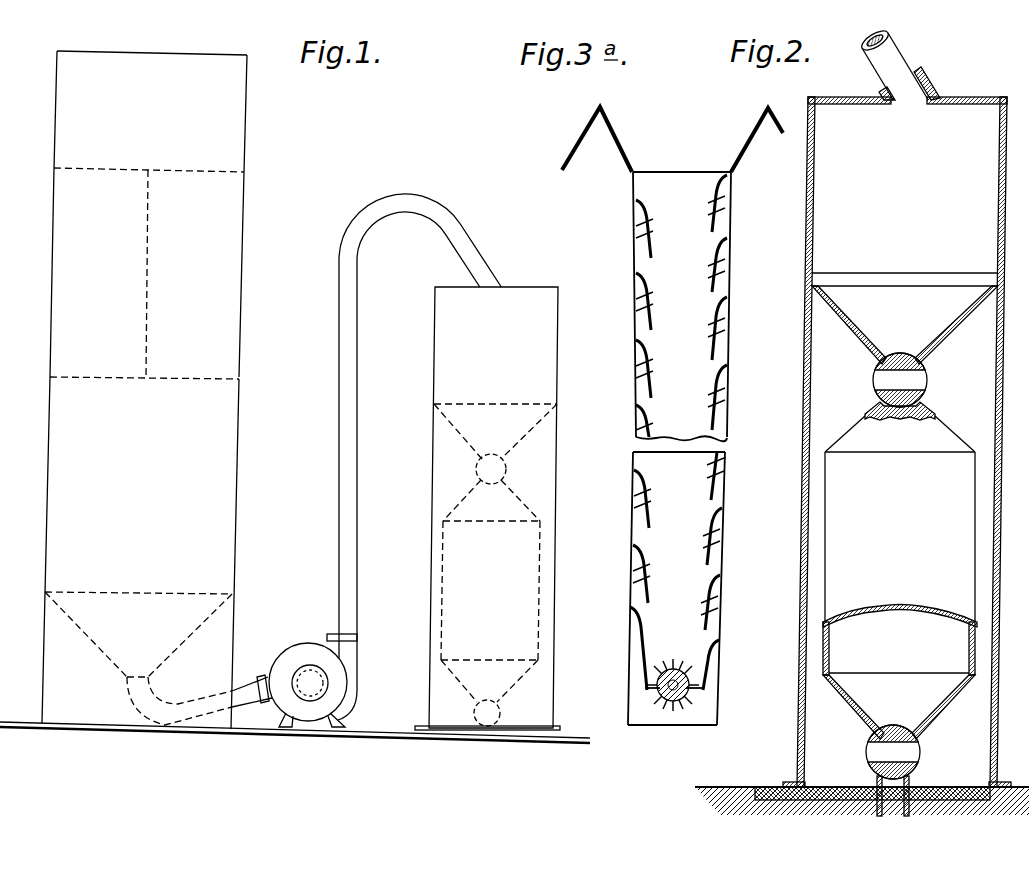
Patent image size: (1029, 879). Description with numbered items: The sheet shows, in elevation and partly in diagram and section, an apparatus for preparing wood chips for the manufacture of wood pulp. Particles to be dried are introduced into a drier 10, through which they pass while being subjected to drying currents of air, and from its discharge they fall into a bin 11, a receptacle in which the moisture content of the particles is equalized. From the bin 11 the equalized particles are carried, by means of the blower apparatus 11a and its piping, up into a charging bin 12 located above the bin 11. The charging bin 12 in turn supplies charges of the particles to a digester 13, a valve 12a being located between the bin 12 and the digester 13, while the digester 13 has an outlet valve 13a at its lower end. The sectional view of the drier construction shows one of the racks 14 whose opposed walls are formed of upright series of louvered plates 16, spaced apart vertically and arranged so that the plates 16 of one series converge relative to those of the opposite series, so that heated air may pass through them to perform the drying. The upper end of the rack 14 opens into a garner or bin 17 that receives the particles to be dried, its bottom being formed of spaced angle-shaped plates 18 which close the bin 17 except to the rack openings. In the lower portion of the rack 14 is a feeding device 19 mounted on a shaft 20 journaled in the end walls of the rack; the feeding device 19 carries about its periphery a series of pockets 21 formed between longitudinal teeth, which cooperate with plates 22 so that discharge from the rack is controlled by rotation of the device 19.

In FIG. 1, the drier 10 is at (228, 255).
In FIG. 1, the bin 11 is at (230, 452).
In FIG. 1, the blower apparatus 11a is at (297, 652).
In FIG. 1, the charging bin 12 is at (547, 375).
In FIG. 2, the charging bin 12 is at (1005, 191).
In FIG. 1, the valve 12a is at (506, 469).
In FIG. 2, the valve 12a is at (915, 380).
In FIG. 1, the digester 13 is at (547, 586).
In FIG. 2, the digester 13 is at (962, 537).
In FIG. 1, the outlet valve 13a is at (500, 712).
In FIG. 2, the outlet valve 13a is at (903, 753).
In FIG. 3A, the racks 14 is at (708, 370).
In FIG. 3A, the louvered plates 16 is at (718, 195).
In FIG. 1, the garner 17 is at (230, 148).
In FIG. 3A, the angle-shaped plates 18 is at (625, 148).
In FIG. 3A, the feeding devices 19 is at (685, 705).
In FIG. 3A, the shafts 20 is at (668, 705).
In FIG. 3A, the pockets 21 is at (676, 667).
In FIG. 3A, the plates 22 is at (703, 673).